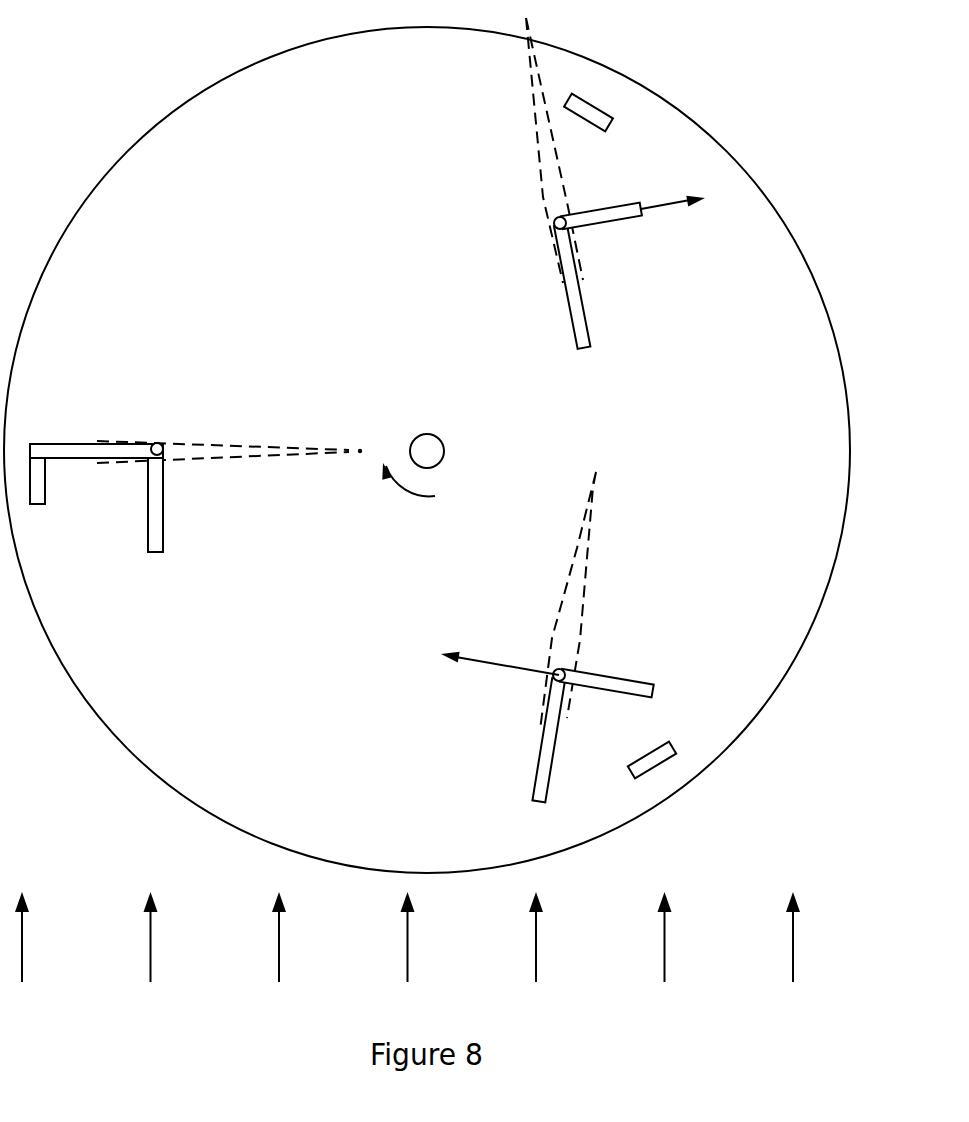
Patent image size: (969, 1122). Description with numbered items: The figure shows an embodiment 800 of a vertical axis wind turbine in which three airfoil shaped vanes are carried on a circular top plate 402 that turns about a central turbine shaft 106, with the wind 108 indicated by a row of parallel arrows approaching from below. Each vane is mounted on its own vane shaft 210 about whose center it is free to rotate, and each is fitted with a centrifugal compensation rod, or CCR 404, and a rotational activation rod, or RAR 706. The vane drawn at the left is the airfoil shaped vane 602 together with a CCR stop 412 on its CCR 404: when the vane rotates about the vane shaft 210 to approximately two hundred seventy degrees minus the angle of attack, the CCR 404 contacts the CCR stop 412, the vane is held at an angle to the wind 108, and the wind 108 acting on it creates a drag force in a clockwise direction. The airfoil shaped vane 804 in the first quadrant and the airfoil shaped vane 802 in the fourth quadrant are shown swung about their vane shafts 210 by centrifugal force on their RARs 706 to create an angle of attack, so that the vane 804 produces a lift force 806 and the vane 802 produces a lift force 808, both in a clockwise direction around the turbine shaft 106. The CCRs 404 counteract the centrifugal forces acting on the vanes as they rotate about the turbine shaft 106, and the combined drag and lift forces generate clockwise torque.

The embodiment of three airfoil shaped vanes 800 is at (137, 65).
The top plate 402 is at (110, 167).
The turbine shaft 106 is at (428, 434).
The airfoil shaped vane 602 is at (258, 443).
The airfoil shaped vane 804 is at (540, 174).
The airfoil shaped vane 802 is at (577, 548).
The CCR 404 is at (60, 444).
The CCR stop 412 is at (45, 480).
The RAR 706 is at (163, 510).
The vane shaft 210 is at (153, 442).
The lift force 806 is at (673, 204).
The lift force 808 is at (492, 665).
The wind 108 is at (665, 956).